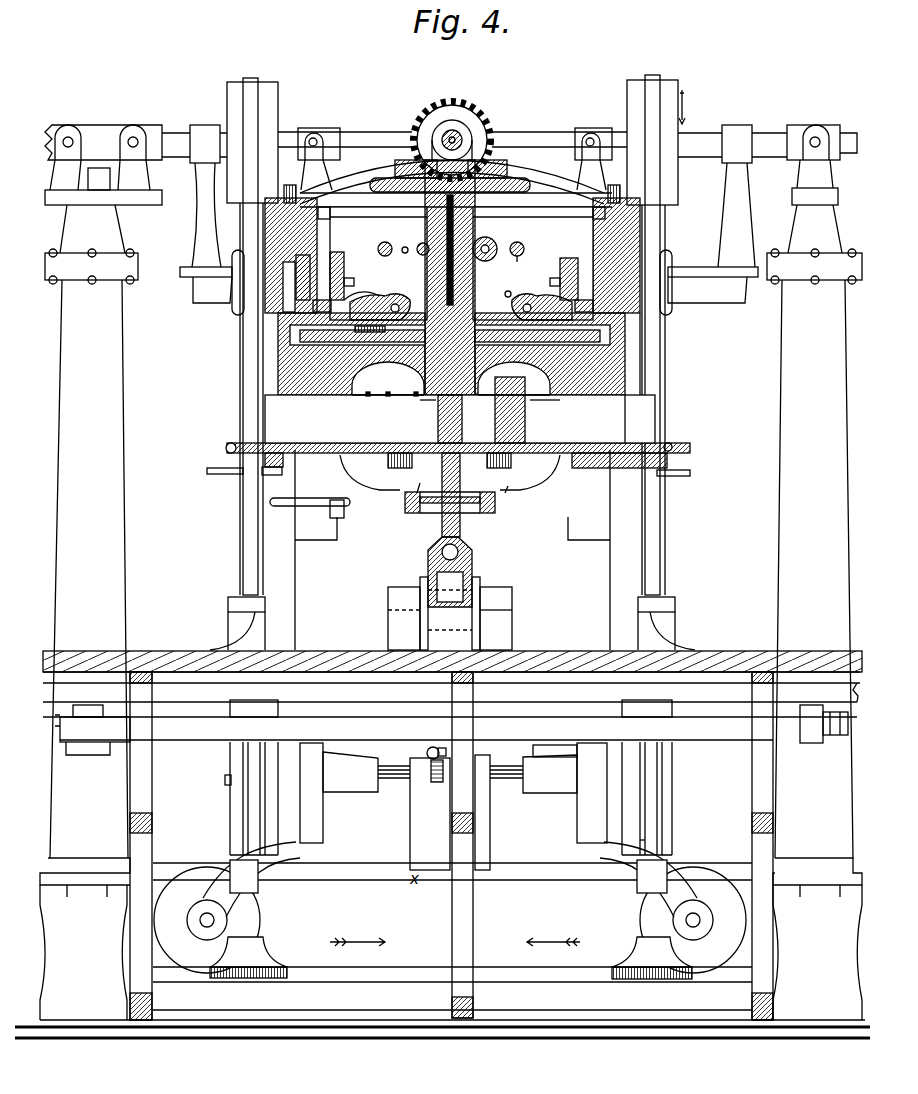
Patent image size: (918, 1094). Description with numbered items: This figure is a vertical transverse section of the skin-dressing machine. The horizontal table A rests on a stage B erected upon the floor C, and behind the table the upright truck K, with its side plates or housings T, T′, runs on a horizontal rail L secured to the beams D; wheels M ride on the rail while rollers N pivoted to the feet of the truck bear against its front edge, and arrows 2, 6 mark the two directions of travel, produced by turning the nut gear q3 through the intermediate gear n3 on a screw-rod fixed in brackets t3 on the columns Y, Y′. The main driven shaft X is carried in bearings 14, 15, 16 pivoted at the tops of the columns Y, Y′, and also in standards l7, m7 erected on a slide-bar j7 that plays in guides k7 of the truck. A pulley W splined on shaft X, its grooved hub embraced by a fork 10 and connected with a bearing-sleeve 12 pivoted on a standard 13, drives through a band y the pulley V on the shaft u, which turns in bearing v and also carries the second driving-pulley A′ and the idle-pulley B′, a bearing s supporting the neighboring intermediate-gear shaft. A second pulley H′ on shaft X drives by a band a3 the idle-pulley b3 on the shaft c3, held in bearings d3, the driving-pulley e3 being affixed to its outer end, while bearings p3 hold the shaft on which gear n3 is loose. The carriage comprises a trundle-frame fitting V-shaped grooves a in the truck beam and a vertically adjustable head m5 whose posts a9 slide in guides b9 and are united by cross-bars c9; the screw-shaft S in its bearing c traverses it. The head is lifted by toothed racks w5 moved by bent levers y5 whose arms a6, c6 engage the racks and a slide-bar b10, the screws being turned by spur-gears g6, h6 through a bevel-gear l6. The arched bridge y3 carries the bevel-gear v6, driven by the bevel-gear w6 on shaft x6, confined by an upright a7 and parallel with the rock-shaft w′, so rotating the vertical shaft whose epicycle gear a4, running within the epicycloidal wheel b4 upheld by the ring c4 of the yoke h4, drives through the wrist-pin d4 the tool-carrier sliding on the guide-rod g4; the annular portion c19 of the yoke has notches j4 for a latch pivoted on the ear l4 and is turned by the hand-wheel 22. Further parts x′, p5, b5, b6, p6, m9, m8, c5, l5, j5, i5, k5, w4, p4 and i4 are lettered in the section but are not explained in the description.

The bearing 16 is at (70, 130).
The bearing 15 is at (130, 130).
The main driven shaft X is at (474, 178).
The standard m7 is at (206, 256).
The horizontal slide-bar j7 is at (475, 285).
The guides or bearings k7 is at (232, 300).
The pulley H′ is at (253, 142).
The band a3 is at (252, 336).
The bearing-sleeve 12 is at (324, 128).
The standard 13 is at (453, 175).
The fork 10 is at (455, 184).
The bevel-gear w6 is at (455, 105).
The shaft x6 is at (422, 118).
The upright a7 is at (460, 150).
The arched cross-head or bridge y3 is at (452, 173).
The bevel-gear v6 is at (512, 176).
The pulley W is at (653, 335).
The standard l7 is at (736, 196).
The bearing 14 is at (812, 127).
The fixed upright column Y′ is at (89, 612).
The fixed upright column Y is at (814, 612).
The upright truck K is at (452, 421).
The posts a9 is at (456, 256).
The cross-bars c9 is at (533, 256).
The guides b9 is at (461, 222).
The grooves a is at (333, 231).
The vertically-adjustable head m5 is at (672, 432).
The horizontal rail L is at (452, 620).
The screw-threaded shaft S is at (485, 243).
The bearing c is at (491, 255).
The roller x′ is at (518, 242).
The rock-shaft w′ is at (529, 252).
The plate p5 is at (300, 266).
The vertical-toothed racks w5 is at (448, 282).
The lever b5 is at (350, 300).
The lever arm c6 is at (461, 296).
The bent lever y5 is at (507, 290).
The horizontal arm a6 is at (449, 296).
The slot b6 is at (296, 287).
The spur-gear h6 is at (280, 362).
The spur-gear g6 is at (625, 372).
The rod p6 is at (668, 322).
The bevel-gear l6 is at (370, 330).
The band y is at (647, 584).
The annular portion of the yoke c19 is at (460, 414).
The stud or wrist-pin d4 is at (476, 466).
The horizontal slide-bar b10 is at (368, 398).
The notches j4 is at (416, 398).
The yoke h4 is at (427, 422).
The epicycle gear a4 is at (545, 422).
The epicycloidal wheel b4 is at (544, 410).
The ring c4 is at (613, 419).
The hand-wheel 22 is at (672, 447).
The arm m9 is at (452, 467).
The arm m8 is at (262, 474).
The bracket c5 is at (457, 471).
The link l5 is at (469, 477).
The bracket j5 is at (328, 506).
The rod i5 is at (319, 513).
The block k5 is at (450, 511).
The crossbar w4 is at (444, 514).
The shaft p4 is at (472, 504).
The guide-rod g4 is at (442, 552).
The horizontal ear l4 is at (466, 613).
The guide block i4 is at (430, 618).
The side plate or housing T′ is at (250, 606).
The side plate or housing T is at (631, 583).
The horizontal table A is at (452, 685).
The stage B is at (451, 846).
The beams D is at (470, 1057).
The brackets t3 is at (451, 725).
The horizontal shaft c3 is at (219, 798).
The bearings p3 is at (254, 777).
The driving-pulley e3 is at (274, 798).
The idle-pulley b3 is at (243, 806).
The bearings d3 is at (375, 806).
The spur-gear q3 is at (421, 743).
The intermediate spur-gear n3 is at (419, 775).
The horizontal shaft u is at (499, 811).
The bearing s is at (555, 747).
The bearing v is at (565, 793).
The second driving-pulley A′ is at (645, 777).
The driving-pulley V is at (680, 752).
The idle-pulley B′ is at (662, 820).
The wheels M is at (450, 907).
The rollers N is at (451, 958).
The arrow 6 is at (357, 931).
The arrow 2 is at (553, 929).
The floor C is at (442, 1039).